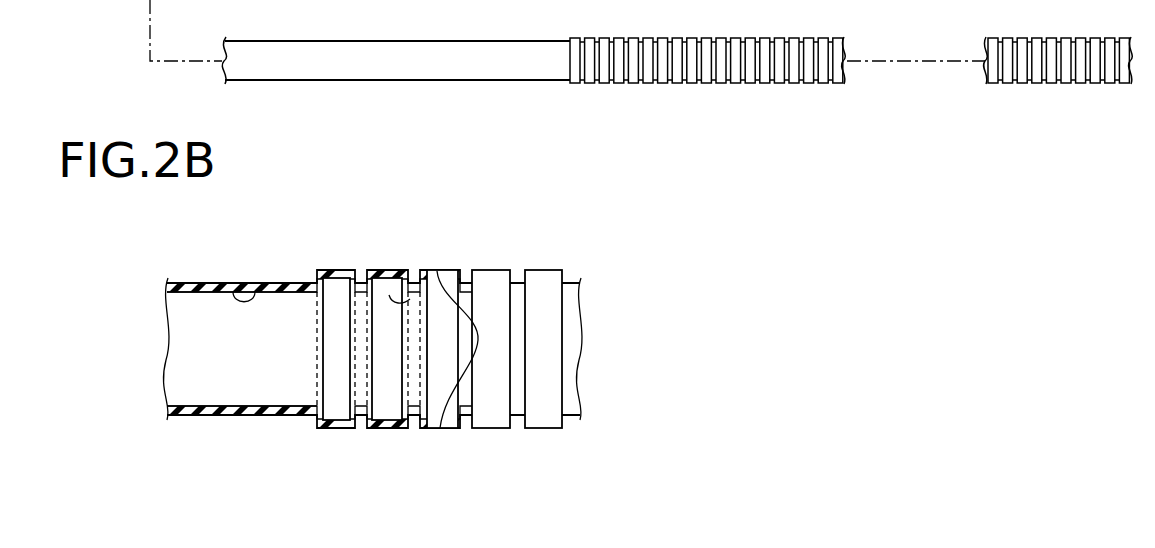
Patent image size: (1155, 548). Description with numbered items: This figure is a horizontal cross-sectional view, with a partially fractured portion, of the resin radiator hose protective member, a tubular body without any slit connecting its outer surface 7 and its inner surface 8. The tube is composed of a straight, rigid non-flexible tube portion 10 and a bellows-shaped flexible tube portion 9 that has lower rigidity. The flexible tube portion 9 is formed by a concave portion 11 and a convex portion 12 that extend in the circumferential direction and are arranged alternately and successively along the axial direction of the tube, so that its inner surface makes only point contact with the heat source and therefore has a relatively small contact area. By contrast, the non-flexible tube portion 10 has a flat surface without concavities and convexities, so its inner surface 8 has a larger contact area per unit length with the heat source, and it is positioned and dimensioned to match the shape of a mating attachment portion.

The outer surface 7 is at (207, 418).
The inner surface 8 is at (233, 292).
The flexible tube portion 9 is at (690, 84).
The non-flexible tube portion 10 is at (377, 82).
The concave portion 11 is at (587, 84).
The convex portion 12 is at (576, 84).